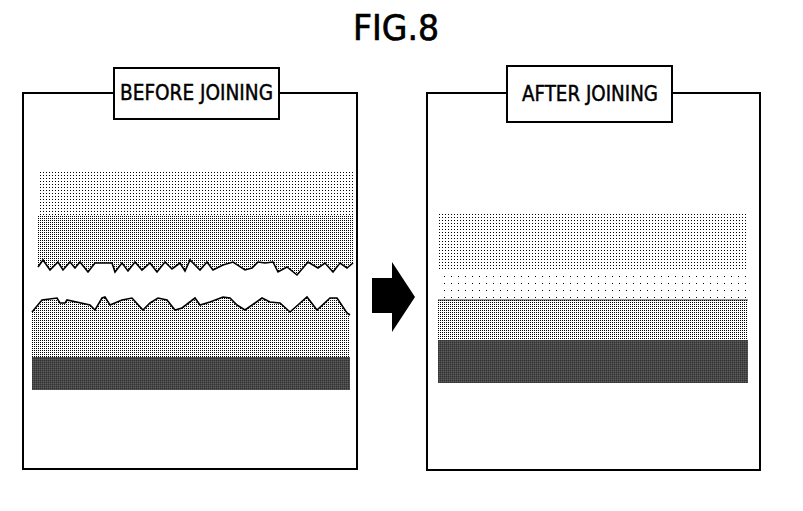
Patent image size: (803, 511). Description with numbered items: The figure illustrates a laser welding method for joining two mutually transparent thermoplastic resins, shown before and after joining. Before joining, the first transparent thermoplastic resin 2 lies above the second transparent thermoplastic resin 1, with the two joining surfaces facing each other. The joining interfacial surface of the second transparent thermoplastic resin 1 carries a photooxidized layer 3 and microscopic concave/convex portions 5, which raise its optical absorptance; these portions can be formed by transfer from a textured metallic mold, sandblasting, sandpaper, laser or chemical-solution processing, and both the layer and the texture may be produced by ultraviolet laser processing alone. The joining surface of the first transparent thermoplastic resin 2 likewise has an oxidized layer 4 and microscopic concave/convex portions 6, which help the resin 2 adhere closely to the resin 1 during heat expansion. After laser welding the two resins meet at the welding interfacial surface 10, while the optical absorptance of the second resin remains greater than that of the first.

The second transparent thermoplastic resin 1 is at (132, 382).
The first transparent thermoplastic resin 2 is at (120, 188).
The photooxidized layer of joining interfacial surface of second transparent thermop 3 is at (233, 332).
The oxidized layer of joining interfacial surface of first transparent thermoplastic 4 is at (163, 235).
The microscopic concave/convex portions of joining interfacial surface of second tra 5 is at (202, 300).
The microscopic concave/convex portions of joining interfacial surface of first tran 6 is at (277, 260).
The welding interfacial surface 10 is at (628, 303).